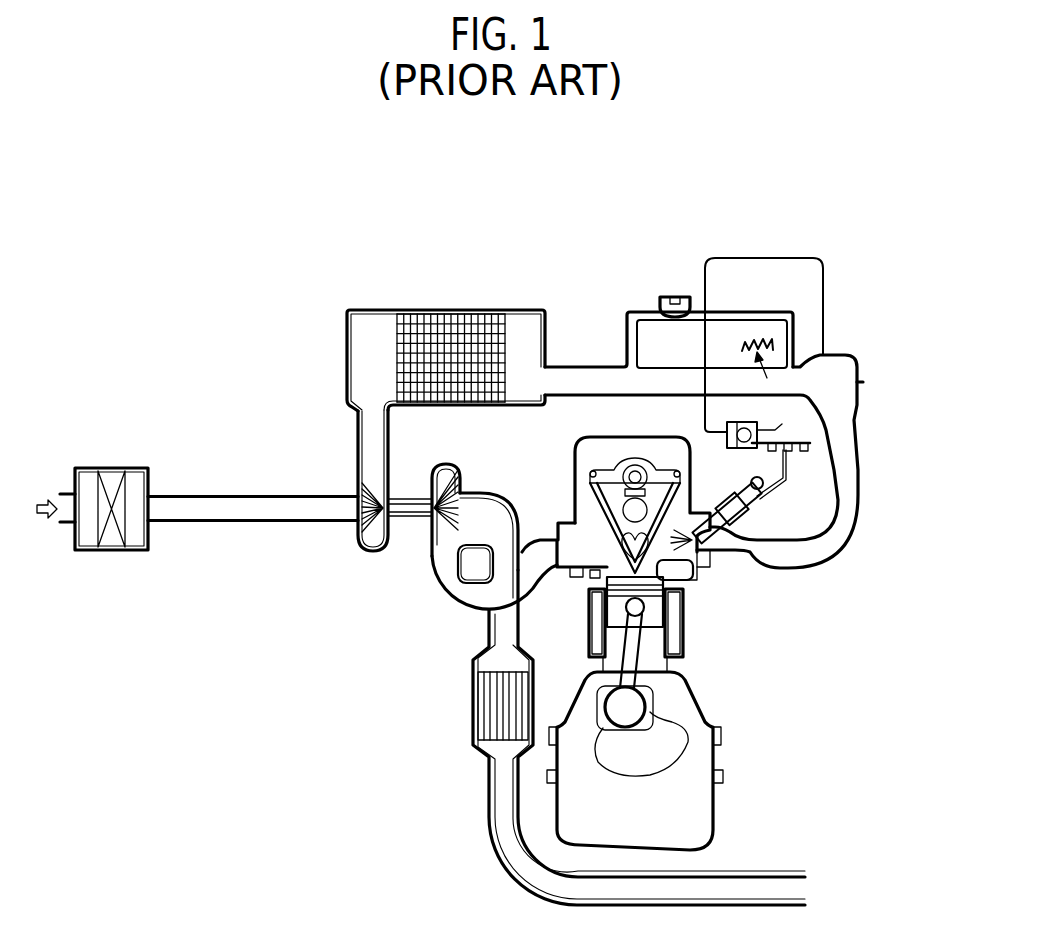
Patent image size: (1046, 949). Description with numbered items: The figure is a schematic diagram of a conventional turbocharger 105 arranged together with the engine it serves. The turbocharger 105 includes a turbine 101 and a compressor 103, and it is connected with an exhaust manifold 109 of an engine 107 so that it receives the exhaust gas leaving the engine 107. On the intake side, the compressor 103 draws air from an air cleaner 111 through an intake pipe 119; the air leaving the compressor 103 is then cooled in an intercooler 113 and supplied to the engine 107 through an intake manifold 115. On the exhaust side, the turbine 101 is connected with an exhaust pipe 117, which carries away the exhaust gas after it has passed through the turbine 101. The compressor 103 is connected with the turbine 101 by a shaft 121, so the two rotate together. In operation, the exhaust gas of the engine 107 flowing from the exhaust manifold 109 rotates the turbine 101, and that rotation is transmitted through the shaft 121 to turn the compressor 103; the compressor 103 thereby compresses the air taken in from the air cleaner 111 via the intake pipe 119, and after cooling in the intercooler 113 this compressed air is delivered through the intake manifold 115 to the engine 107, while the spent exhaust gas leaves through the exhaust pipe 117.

The turbine 101 is at (460, 484).
The compressor 103 is at (388, 480).
The turbocharger 105 is at (438, 504).
The engine 107 is at (703, 675).
The exhaust manifold 109 is at (535, 602).
The air cleaner 111 is at (112, 538).
The intercooler 113 is at (450, 310).
The intake manifold 115 is at (843, 540).
The exhaust pipe 117 is at (518, 520).
The intake pipe 119 is at (240, 512).
The shaft 121 is at (407, 500).